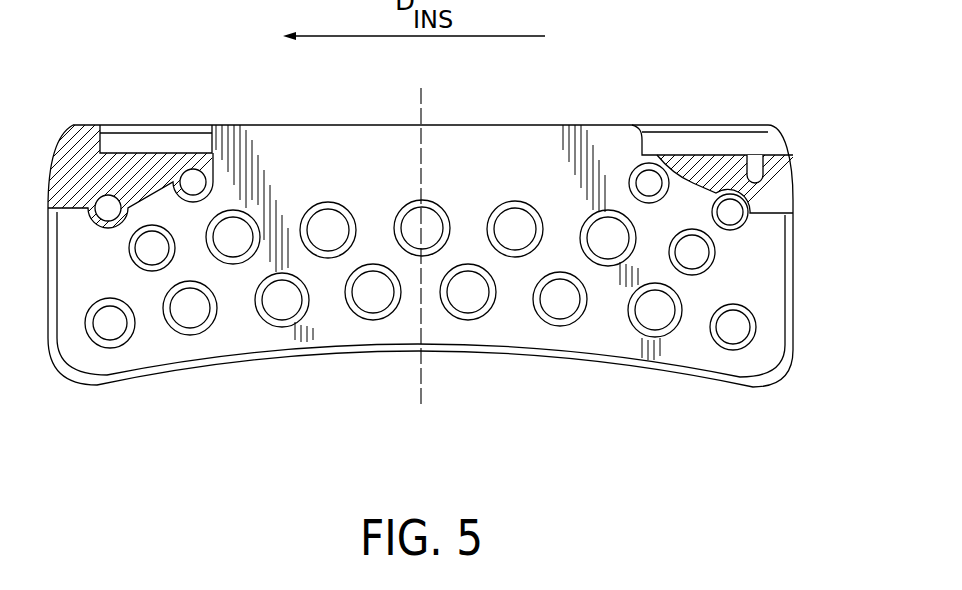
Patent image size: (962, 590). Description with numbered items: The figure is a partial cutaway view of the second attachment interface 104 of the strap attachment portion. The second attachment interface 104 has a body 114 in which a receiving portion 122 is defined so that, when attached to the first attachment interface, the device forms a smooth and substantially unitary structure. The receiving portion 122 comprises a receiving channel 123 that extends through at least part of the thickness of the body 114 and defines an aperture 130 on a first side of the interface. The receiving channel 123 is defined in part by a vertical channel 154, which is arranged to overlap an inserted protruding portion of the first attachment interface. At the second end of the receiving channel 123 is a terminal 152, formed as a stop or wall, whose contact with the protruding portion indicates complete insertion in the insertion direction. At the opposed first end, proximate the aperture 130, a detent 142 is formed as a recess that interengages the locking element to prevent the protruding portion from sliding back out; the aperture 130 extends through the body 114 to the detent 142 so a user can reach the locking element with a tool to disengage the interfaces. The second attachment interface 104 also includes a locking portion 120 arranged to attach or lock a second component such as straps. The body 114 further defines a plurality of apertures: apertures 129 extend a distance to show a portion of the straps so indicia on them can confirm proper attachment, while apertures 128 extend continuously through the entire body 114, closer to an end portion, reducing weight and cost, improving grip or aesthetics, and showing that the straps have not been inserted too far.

The second attachment interface 104 is at (608, 372).
The body 114 is at (755, 288).
The locking portion 120 is at (772, 372).
The receiving portion 122 is at (755, 125).
The receiving channel 123 is at (672, 143).
The apertures 128 is at (647, 181).
The apertures 129 is at (270, 305).
The aperture 130 is at (738, 218).
The detent 142 is at (757, 162).
The terminal 152 is at (83, 123).
The vertical channel 154 is at (168, 123).